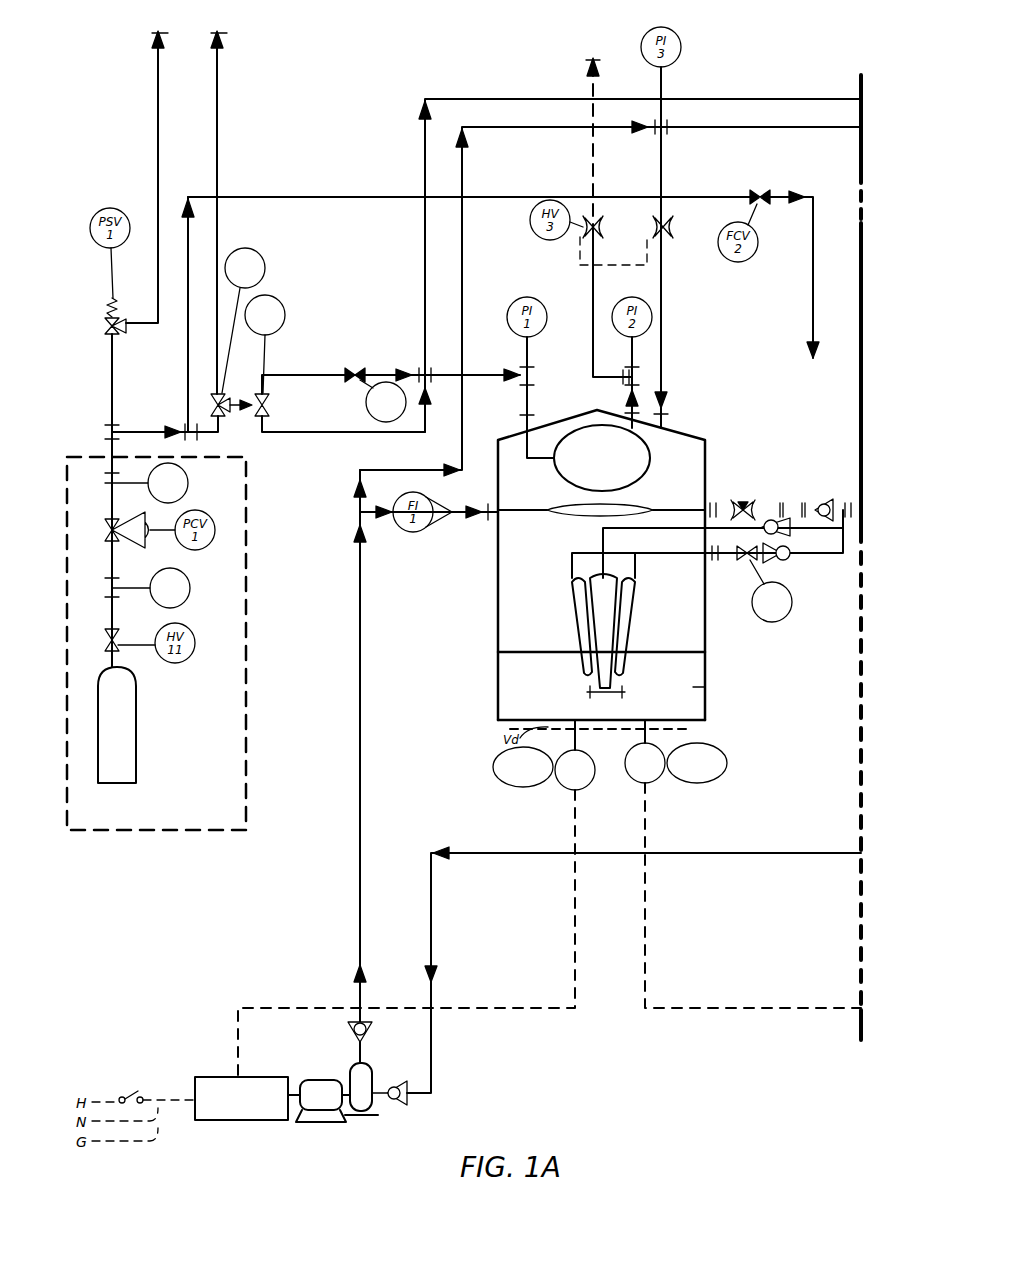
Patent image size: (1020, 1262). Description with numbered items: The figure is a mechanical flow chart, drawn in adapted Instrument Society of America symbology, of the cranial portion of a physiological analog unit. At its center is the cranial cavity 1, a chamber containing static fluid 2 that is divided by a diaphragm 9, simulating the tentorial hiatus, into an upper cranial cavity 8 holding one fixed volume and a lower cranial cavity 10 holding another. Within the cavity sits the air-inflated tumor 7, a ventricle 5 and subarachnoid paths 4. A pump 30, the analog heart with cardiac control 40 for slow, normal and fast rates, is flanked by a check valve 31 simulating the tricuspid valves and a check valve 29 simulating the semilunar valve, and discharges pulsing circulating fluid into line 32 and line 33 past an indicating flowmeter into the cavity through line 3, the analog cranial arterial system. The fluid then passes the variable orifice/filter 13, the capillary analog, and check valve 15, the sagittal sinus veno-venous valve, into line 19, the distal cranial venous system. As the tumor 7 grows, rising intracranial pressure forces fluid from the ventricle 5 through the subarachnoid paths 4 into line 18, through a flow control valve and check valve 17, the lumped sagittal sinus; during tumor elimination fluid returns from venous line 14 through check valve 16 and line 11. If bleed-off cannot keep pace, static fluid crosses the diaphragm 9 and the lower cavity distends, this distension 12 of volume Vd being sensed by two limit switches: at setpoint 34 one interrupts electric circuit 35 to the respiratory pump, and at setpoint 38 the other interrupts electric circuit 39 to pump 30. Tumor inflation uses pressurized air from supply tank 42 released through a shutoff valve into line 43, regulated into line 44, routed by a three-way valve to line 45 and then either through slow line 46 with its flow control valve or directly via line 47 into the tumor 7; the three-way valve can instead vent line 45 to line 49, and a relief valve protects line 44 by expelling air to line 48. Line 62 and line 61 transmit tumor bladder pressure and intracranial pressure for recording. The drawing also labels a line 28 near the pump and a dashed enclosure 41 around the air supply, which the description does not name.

The cranial cavity 1 is at (498, 602).
The static fluid 2 is at (498, 690).
The line 3 is at (650, 506).
The subarachnoid paths 4 is at (573, 594).
The ventricle 5 is at (622, 570).
The tumor 7 is at (558, 481).
The upper cranial cavity 8 is at (697, 634).
The diaphragm 9 is at (657, 658).
The lower cranial cavity 10 is at (705, 688).
The line 11 is at (708, 546).
The distension of cranial cavity 12 is at (690, 729).
The variable orifice/filter 13 is at (738, 500).
The line 14 is at (777, 503).
The check valve 15 is at (830, 500).
The check valve 16 is at (792, 537).
The check valve 17 is at (786, 561).
The line 18 is at (720, 562).
The line 19 is at (806, 503).
The pump discharge line 28 is at (431, 1058).
The check valve 29 is at (410, 1100).
The pump 30 is at (366, 1070).
The check valve 31 is at (350, 1032).
The line 32 is at (360, 912).
The line 33 is at (360, 597).
The setpoint 34 is at (724, 770).
The electric circuit 35 is at (647, 822).
The setpoint 38 is at (520, 787).
The electric circuit 39 is at (578, 828).
The cardiac control 40 is at (222, 1077).
The gas supply assembly 41 is at (208, 831).
The supply tank 42 is at (136, 714).
The line 43 is at (105, 590).
The line 44 is at (112, 502).
The line 45 is at (262, 420).
The line 46 is at (391, 377).
The line 47 is at (345, 433).
The line 48 is at (158, 62).
The line 49 is at (217, 62).
The line 61 is at (698, 138).
The line 62 is at (718, 104).